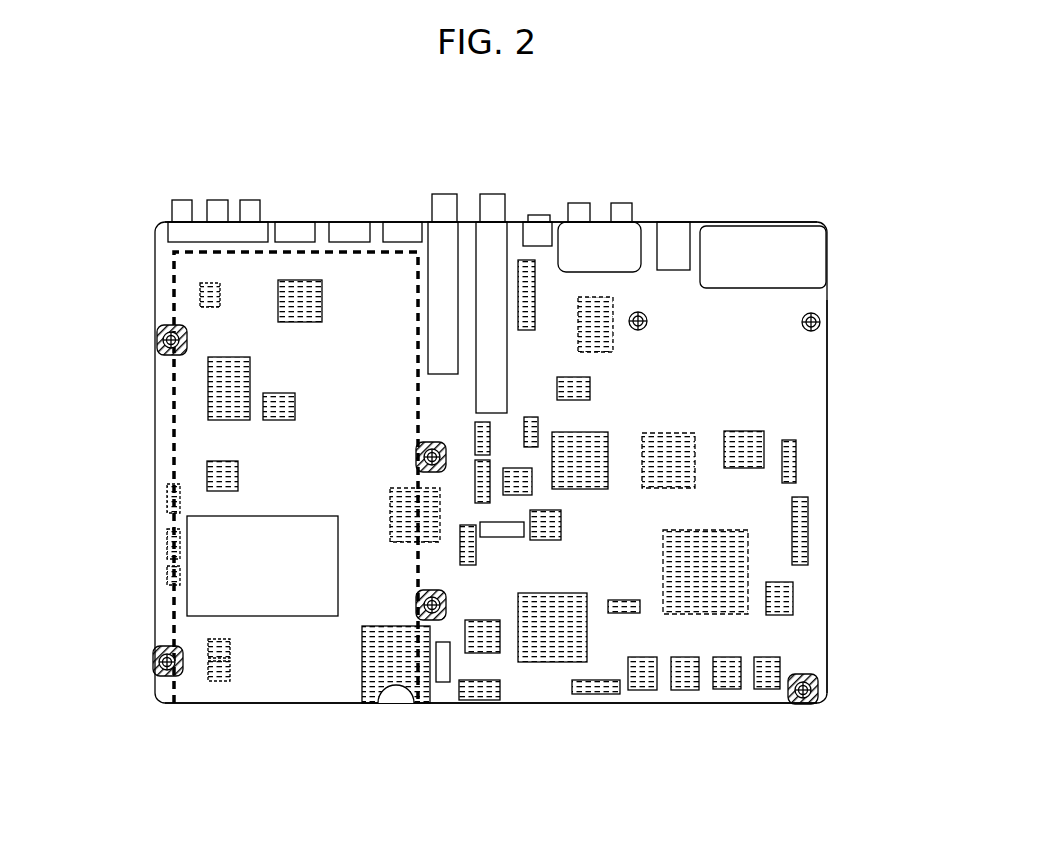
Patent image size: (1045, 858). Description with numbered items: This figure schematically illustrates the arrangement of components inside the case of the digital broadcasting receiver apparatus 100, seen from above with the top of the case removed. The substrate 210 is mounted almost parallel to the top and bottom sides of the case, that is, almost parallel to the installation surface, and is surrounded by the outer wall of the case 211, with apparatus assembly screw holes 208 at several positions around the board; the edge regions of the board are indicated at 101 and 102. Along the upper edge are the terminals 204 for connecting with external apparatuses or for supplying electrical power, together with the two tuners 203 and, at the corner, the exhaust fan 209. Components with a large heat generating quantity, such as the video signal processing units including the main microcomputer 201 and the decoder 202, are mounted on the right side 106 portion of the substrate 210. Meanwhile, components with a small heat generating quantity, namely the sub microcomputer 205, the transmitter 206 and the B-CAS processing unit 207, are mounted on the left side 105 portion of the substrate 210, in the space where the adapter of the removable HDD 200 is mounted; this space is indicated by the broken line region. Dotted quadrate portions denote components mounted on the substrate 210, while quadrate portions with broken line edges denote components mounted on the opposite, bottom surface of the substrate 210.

The digital broadcasting receiver apparatus 100 is at (808, 141).
The first edge (bottom side) 101 is at (485, 716).
The second edge (top side) 102 is at (493, 164).
The left side 105 is at (142, 428).
The right side 106 is at (838, 430).
The adapter of the removable HDD 200 is at (173, 612).
The main microcomputer 201 is at (733, 578).
The decoder 202 is at (671, 433).
The tuner 203 is at (441, 357).
The terminals 204 is at (203, 225).
The sub microcomputer 205 is at (237, 357).
The transmitter 206 is at (322, 300).
The B-CAS processing unit 207 is at (276, 516).
The apparatus assembly screw hole 208 is at (160, 341).
The exhaust fan 209 is at (815, 252).
The substrate 210 is at (788, 368).
The outer wall of the case 211 is at (827, 630).